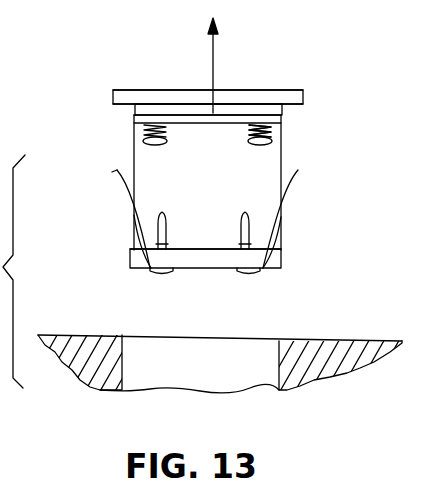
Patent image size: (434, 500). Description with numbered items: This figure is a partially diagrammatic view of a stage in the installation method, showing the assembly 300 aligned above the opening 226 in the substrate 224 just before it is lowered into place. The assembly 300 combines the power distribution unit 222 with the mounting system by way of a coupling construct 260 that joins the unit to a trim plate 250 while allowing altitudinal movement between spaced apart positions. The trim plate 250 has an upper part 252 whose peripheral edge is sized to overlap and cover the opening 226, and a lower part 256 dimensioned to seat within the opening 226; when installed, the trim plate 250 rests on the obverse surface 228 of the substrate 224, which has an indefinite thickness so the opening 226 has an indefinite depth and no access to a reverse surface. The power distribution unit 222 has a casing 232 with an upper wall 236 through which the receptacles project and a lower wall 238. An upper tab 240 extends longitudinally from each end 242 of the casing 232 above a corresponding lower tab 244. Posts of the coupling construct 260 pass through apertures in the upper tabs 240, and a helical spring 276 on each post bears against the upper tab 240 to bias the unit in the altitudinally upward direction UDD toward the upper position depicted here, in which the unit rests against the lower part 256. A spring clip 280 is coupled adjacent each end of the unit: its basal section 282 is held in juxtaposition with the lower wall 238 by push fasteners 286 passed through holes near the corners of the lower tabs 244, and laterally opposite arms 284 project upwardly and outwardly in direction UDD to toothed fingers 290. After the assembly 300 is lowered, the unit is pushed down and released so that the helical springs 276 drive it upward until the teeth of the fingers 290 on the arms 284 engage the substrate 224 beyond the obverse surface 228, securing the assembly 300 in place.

The altitudinally upward direction UDD is at (214, 54).
The power distribution unit 222 is at (290, 162).
The substrate 224 is at (374, 317).
The opening 226 is at (123, 358).
The obverse surface 228 is at (84, 334).
The casing 232 is at (171, 219).
The upper wall 236 is at (134, 120).
The lower wall 238 is at (129, 258).
The upper tab 240 is at (221, 119).
The end 242 is at (195, 187).
The lower tab 244 is at (205, 247).
The trim plate 250 is at (142, 82).
The upper part 252 is at (113, 97).
The lower part 256 is at (134, 107).
The coupling construct 260 is at (280, 132).
The helical spring 276 is at (143, 152).
The spring clip 280 is at (196, 279).
The basal section 282 is at (217, 273).
The arms 284 is at (132, 236).
The push fasteners 286 is at (247, 200).
The fingers 290 is at (115, 182).
The assembly 300 is at (290, 85).